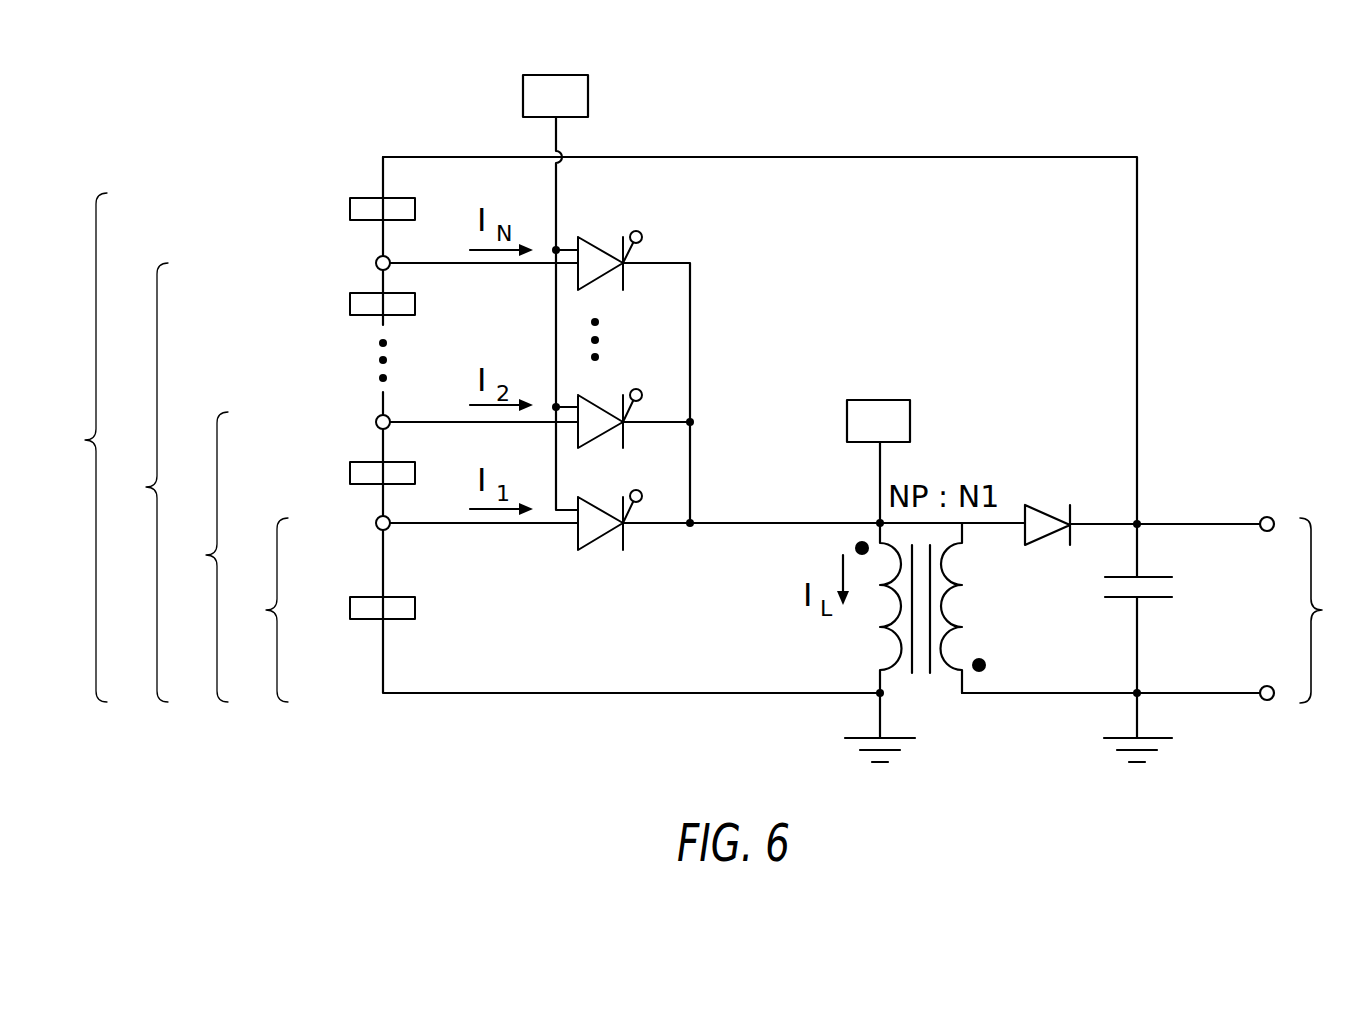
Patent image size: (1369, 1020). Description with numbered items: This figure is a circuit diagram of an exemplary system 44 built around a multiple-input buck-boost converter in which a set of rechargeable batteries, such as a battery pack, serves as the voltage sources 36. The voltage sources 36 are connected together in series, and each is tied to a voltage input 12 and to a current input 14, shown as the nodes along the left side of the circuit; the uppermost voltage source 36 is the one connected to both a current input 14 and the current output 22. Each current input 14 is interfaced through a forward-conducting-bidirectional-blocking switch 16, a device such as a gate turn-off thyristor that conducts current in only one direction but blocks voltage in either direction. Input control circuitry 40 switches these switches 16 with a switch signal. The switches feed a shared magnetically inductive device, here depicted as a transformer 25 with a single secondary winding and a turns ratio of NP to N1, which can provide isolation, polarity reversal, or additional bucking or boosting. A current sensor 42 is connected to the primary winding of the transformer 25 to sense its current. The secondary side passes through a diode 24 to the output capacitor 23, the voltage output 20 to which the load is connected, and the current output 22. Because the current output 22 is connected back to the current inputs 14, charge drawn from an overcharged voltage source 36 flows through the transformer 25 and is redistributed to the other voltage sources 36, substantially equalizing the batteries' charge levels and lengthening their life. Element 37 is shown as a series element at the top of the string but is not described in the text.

The voltage input 12 is at (173, 447).
The current input 14 is at (376, 263).
The forward-conducting-bidirectional-blocking switch 16 is at (642, 237).
The voltage output 20 is at (1308, 610).
The current output 22 is at (1273, 519).
The output capacitor 23 is at (1155, 597).
The diode 24 is at (1048, 505).
The transformer 25 is at (940, 712).
The voltage source 36 is at (366, 293).
The resistor 37 is at (366, 198).
The input control circuitry 40 is at (558, 136).
The current sensor 42 is at (910, 420).
The exemplary system 44 is at (1205, 143).